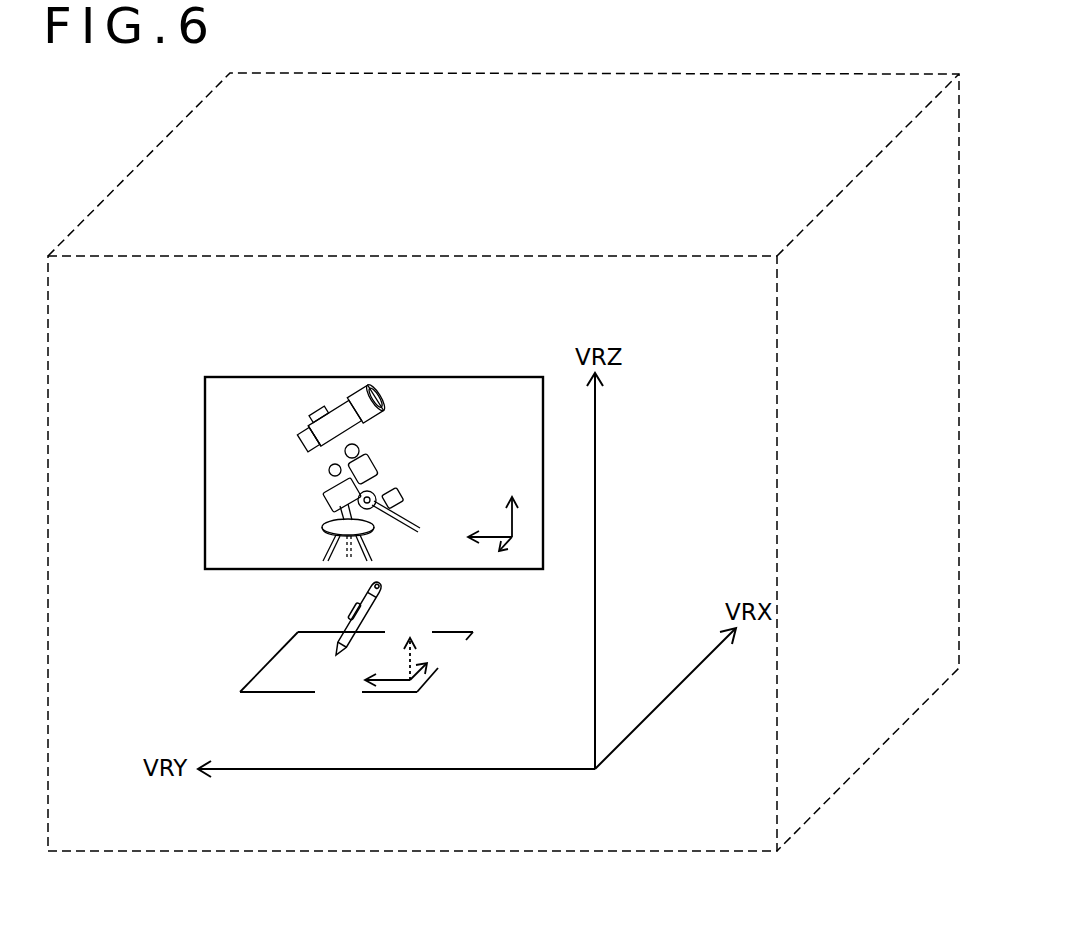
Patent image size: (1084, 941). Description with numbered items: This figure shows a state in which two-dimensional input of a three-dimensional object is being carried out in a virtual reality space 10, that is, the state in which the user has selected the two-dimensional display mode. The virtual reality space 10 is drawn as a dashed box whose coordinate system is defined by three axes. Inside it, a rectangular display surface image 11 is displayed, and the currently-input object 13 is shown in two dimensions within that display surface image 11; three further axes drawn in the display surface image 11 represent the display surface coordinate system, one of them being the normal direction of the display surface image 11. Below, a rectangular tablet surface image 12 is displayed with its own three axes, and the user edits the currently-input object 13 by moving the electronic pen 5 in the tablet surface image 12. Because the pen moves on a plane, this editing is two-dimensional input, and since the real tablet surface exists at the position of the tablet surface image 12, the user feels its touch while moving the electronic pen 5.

The virtual reality space 10 is at (723, 852).
The display surface image 11 is at (500, 392).
The tablet surface image 12 is at (296, 648).
The currently-input object 13 is at (370, 472).
The electronic pen 5 is at (350, 628).